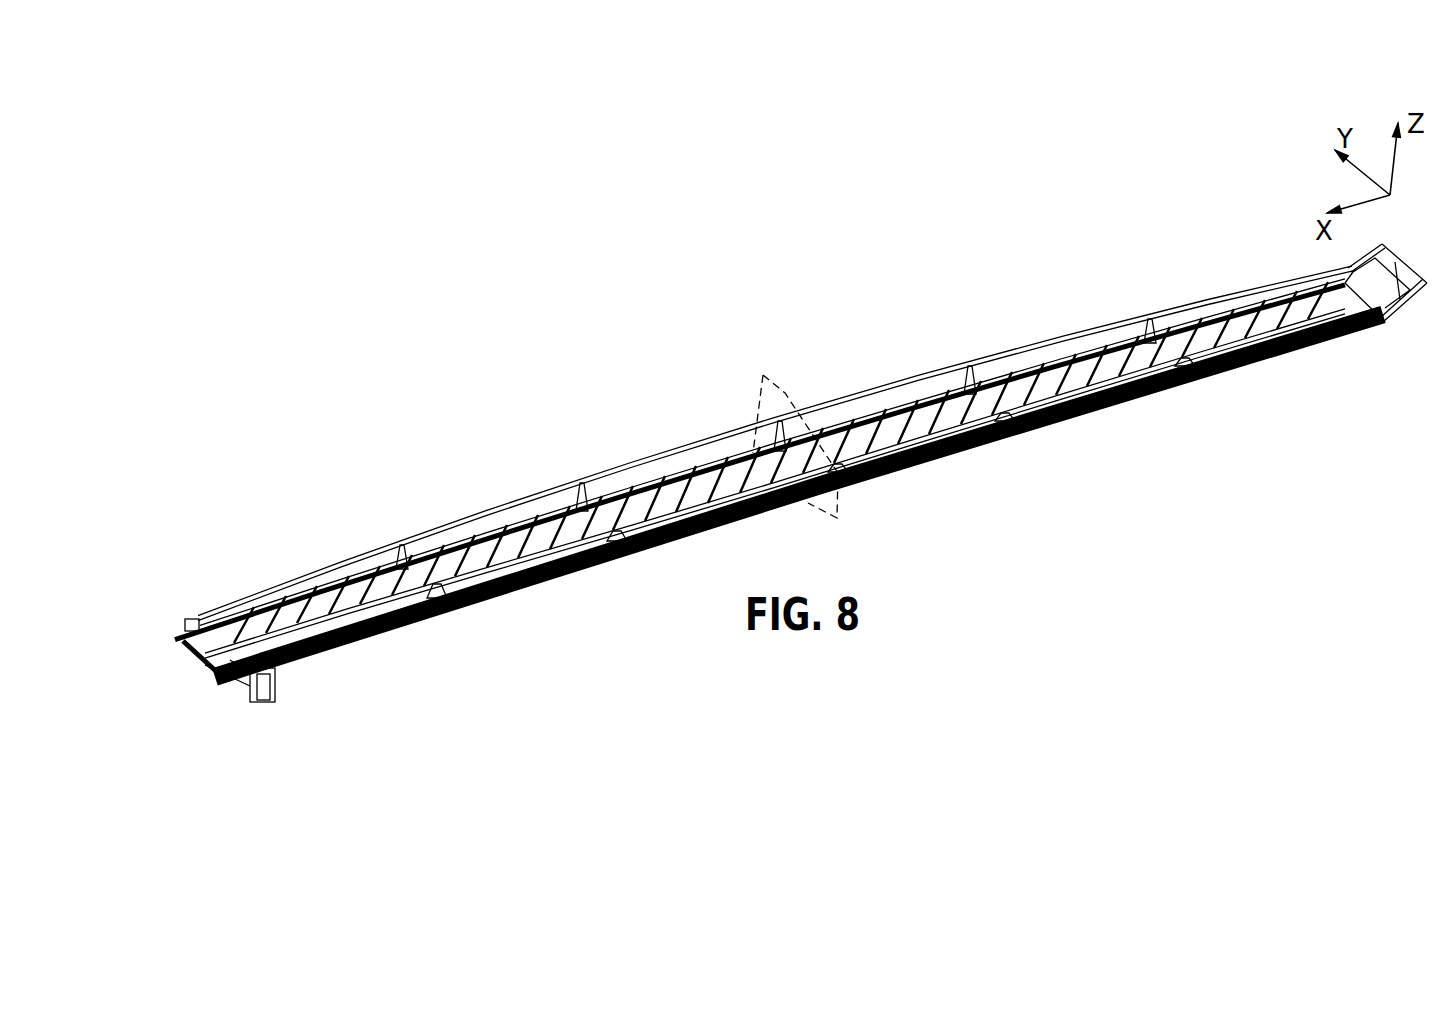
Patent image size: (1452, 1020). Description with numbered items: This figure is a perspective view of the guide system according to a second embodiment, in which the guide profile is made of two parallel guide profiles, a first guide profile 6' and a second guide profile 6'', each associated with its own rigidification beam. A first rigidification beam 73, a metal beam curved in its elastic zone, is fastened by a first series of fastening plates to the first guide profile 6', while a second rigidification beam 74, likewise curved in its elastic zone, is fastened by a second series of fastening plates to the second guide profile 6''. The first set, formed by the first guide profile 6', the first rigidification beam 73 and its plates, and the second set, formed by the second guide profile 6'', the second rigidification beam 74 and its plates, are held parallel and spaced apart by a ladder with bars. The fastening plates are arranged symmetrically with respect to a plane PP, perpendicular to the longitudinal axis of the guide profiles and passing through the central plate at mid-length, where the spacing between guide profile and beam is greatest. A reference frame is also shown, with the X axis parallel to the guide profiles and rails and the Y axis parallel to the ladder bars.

The first rigidification beam 73 is at (520, 500).
The second rigidification beam 74 is at (513, 590).
The first guide profile 6' is at (742, 495).
The second guide profile 6'' is at (223, 700).
The plane PP is at (785, 393).